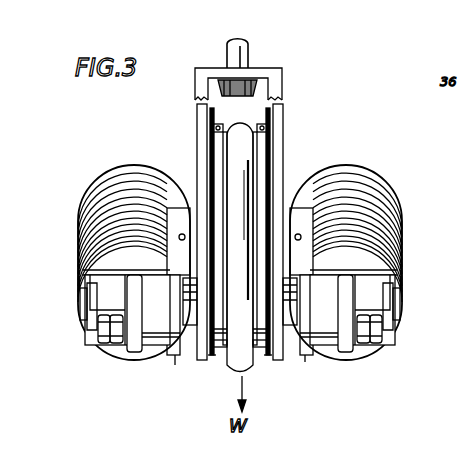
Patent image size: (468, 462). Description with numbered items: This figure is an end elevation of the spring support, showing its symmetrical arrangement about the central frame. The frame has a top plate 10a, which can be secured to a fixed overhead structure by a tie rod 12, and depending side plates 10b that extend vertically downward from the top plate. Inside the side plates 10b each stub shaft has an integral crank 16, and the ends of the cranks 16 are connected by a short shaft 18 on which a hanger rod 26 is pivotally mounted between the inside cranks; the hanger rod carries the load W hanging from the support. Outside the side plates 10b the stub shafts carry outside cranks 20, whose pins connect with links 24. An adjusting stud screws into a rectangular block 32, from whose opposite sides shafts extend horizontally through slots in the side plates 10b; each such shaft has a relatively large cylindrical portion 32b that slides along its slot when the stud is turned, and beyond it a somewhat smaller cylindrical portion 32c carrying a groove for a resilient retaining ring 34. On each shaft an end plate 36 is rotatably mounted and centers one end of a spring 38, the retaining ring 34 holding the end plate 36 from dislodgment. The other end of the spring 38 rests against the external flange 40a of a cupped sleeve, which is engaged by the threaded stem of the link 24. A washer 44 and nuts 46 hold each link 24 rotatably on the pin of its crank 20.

The top plate 10a is at (262, 70).
The side plates 10b is at (197, 89).
The tie rod 12 is at (238, 41).
The crank 16 is at (210, 143).
The short shaft 18 is at (226, 128).
The outside crank 20 is at (190, 208).
The link 24 is at (134, 352).
The hanger rod 26 is at (246, 374).
The rectangular block 32 is at (82, 308).
The large cylindrical portion 32b is at (220, 350).
The smaller cylindrical portion 32c is at (402, 300).
The retaining ring 34 is at (78, 328).
The end plate 36 is at (93, 342).
The spring 38 is at (78, 212).
The external flange 40a is at (134, 165).
The washer 44 is at (123, 350).
The nuts 46 is at (102, 350).